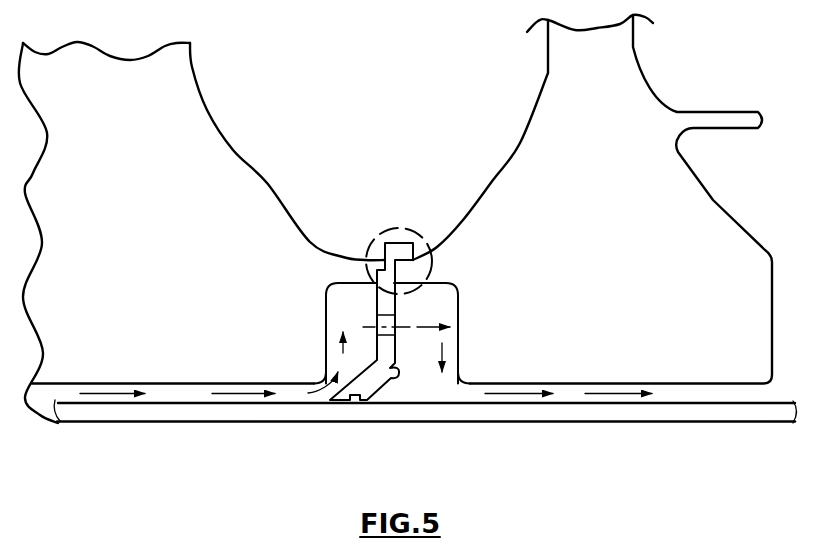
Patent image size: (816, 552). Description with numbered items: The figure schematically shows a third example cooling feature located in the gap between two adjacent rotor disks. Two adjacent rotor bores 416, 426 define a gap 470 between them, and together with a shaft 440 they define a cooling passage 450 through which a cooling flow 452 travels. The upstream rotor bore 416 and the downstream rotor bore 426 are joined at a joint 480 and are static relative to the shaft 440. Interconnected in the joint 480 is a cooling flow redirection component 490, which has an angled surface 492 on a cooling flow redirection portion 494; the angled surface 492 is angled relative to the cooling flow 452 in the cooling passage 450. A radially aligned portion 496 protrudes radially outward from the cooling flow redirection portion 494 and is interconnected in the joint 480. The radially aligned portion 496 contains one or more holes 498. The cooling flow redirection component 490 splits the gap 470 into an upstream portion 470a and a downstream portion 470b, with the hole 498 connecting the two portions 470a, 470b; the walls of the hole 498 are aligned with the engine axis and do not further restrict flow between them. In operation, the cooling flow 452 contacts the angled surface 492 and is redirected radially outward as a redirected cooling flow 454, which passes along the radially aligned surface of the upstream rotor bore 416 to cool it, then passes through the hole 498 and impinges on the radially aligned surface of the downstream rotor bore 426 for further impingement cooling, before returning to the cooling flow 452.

The upstream rotor bore 416 is at (180, 272).
The downstream rotor bore 426 is at (633, 272).
The shaft 440 is at (175, 412).
The cooling passage 450 is at (160, 395).
The cooling flow 452 is at (227, 395).
The redirected cooling flow 454 is at (338, 350).
The gap 470 is at (398, 395).
The upstream portion 470a is at (350, 302).
The downstream portion 470b is at (427, 296).
The joint 480 is at (405, 225).
The cooling flow redirection component 490 is at (402, 367).
The angled surface 492 is at (358, 374).
The cooling flow redirection portion 494 is at (366, 384).
The radially aligned portion 496 is at (396, 307).
The hole 498 is at (397, 332).